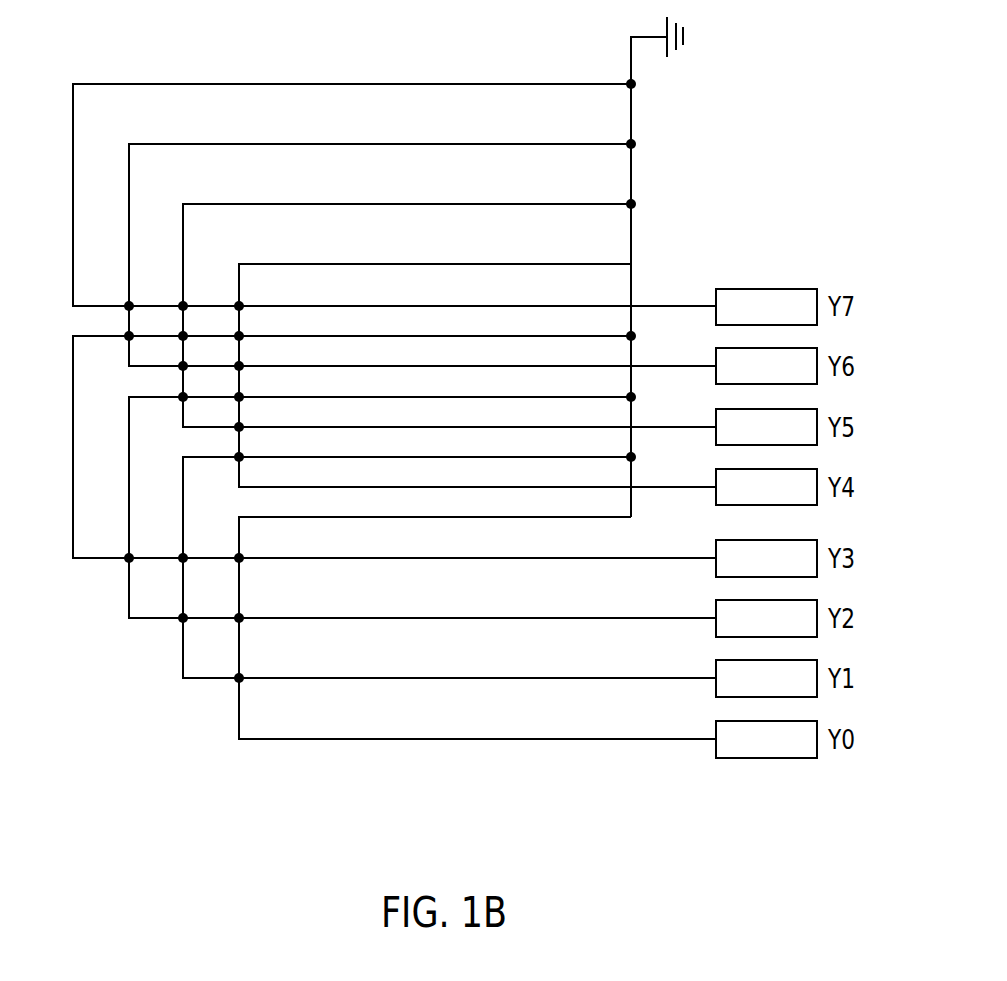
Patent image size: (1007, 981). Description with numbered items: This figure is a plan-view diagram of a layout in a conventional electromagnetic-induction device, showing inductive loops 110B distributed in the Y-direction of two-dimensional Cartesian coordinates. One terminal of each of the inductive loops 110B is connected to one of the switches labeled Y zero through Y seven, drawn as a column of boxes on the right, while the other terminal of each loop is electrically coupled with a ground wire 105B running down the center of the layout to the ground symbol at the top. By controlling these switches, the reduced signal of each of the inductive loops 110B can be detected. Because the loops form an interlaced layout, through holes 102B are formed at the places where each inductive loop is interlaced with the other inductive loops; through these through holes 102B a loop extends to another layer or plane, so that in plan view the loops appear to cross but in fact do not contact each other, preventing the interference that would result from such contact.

The inductive loops 110B is at (73, 163).
The ground wire 105B is at (648, 35).
The through holes 102B is at (180, 619).